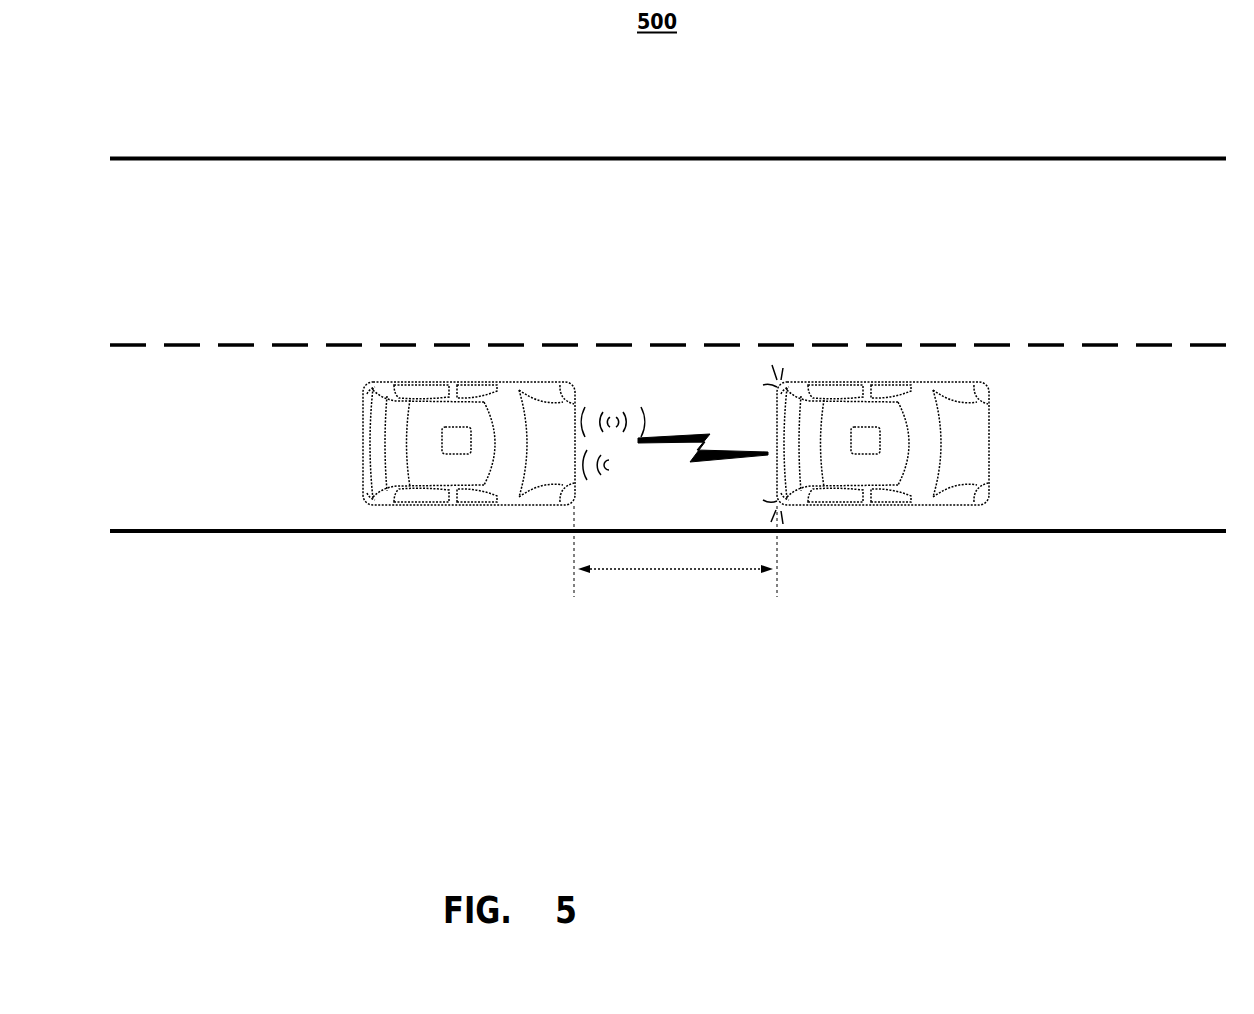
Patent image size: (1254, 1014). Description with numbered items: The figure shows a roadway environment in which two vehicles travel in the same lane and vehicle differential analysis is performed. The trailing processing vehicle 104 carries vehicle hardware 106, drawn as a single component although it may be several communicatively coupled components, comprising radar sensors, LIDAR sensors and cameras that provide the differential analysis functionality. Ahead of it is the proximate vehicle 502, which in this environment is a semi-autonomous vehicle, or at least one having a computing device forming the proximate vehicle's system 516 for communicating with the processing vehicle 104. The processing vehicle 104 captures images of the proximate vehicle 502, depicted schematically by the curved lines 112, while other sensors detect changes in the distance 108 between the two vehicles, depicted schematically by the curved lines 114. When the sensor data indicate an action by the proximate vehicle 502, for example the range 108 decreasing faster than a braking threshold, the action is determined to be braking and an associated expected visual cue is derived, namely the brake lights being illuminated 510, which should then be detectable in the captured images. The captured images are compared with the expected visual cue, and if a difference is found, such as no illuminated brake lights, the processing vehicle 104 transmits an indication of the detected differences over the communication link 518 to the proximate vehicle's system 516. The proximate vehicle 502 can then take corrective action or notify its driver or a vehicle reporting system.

The processing vehicle 104 is at (460, 358).
The vehicle hardware 106 is at (442, 440).
The proximate vehicle 502 is at (933, 357).
The proximate vehicle's system 516 is at (882, 442).
The curved lines depicting captured images 112 is at (642, 412).
The curved lines depicting sensor detection 114 is at (607, 461).
The communication link 518 is at (727, 453).
The illuminated brake lights 510 is at (769, 370).
The distance 108 is at (675, 570).